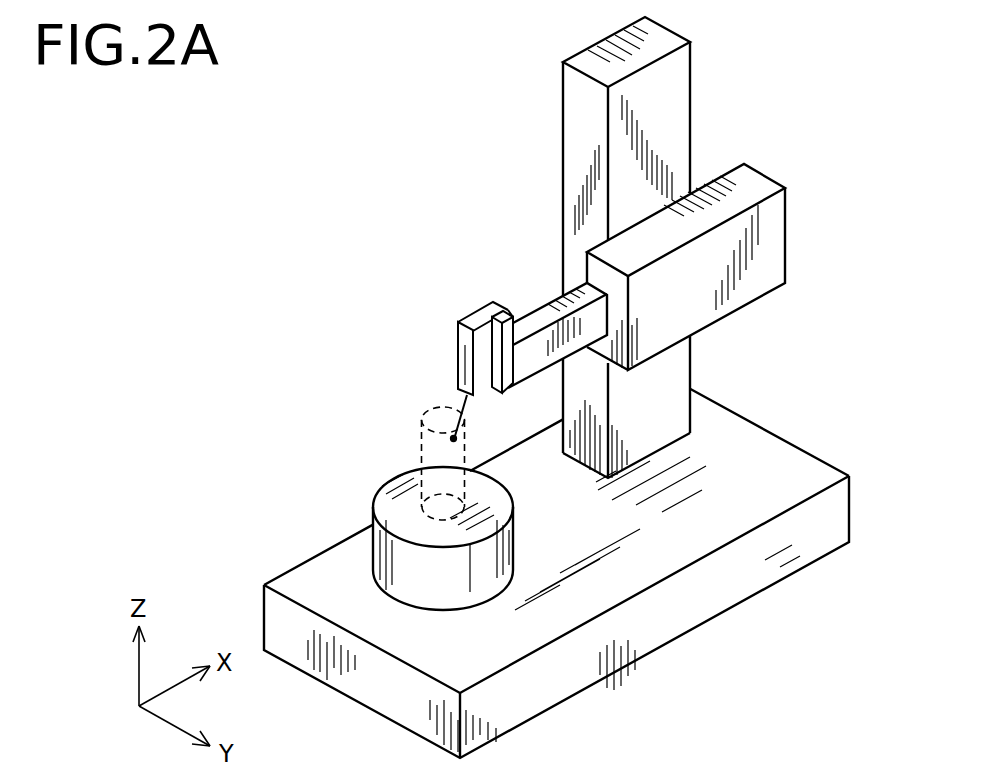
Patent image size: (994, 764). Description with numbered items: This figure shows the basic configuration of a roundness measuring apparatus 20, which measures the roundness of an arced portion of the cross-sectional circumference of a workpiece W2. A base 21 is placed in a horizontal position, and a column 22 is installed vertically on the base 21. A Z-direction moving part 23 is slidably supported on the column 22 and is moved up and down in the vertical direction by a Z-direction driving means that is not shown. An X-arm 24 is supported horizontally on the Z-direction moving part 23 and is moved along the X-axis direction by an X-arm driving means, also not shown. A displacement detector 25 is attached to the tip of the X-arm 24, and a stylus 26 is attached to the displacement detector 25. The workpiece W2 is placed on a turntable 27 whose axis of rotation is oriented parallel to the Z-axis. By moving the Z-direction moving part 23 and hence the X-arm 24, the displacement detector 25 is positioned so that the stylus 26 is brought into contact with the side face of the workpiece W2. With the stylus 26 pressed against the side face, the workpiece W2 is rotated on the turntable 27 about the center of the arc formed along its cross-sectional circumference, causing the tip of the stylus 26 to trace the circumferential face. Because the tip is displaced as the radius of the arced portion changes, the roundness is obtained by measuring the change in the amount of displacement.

The roundness measuring apparatus 20 is at (243, 167).
The base 21 is at (683, 607).
The column 22 is at (670, 107).
The Z-direction moving part 23 is at (787, 237).
The X-arm 24 is at (543, 313).
The displacement detector 25 is at (458, 345).
The stylus 26 is at (462, 403).
The turntable 27 is at (392, 558).
The workpiece W2 is at (421, 453).